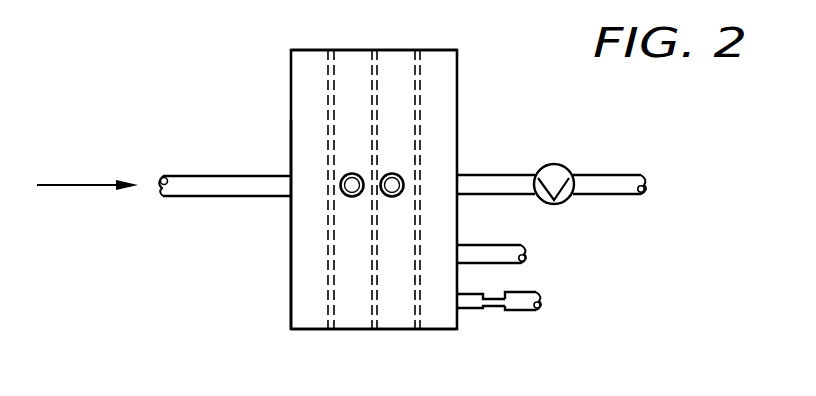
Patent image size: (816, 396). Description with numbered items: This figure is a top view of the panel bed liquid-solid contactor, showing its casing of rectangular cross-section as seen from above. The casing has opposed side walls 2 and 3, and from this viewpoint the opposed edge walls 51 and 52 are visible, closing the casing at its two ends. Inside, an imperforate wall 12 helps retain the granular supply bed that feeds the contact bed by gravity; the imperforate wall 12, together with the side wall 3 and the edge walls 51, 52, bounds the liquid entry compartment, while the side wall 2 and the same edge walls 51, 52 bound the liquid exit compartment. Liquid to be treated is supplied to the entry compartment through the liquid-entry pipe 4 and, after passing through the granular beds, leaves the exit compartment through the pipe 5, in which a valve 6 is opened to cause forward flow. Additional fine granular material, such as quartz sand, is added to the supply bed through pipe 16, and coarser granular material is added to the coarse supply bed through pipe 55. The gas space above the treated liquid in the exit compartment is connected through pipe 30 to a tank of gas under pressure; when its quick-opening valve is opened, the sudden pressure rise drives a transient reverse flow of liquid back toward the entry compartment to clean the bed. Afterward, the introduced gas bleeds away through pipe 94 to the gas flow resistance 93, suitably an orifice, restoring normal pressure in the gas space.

The side wall 2 is at (457, 219).
The side wall 3 is at (291, 265).
The liquid-entry pipe 4 is at (218, 176).
The liquid exit pipe 5 is at (500, 175).
The valve 6 is at (562, 166).
The imperforate wall 12 is at (328, 80).
The pipe 16 is at (352, 173).
The pipe 30 is at (525, 262).
The edge wall 51 is at (350, 50).
The edge wall 52 is at (363, 330).
The pipe 55 is at (395, 173).
The gas flow resistance 93 is at (496, 293).
The pipe 94 is at (475, 310).